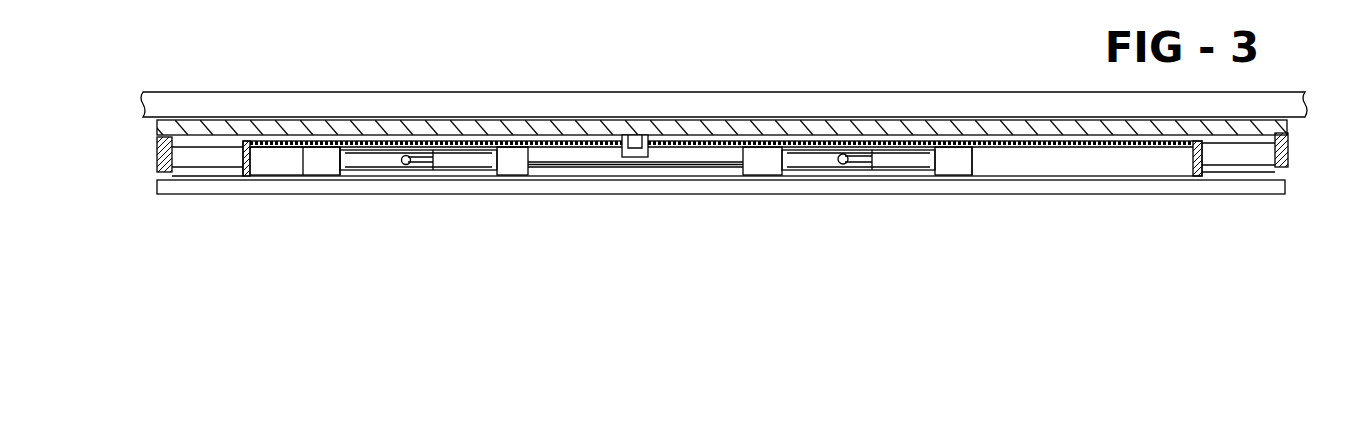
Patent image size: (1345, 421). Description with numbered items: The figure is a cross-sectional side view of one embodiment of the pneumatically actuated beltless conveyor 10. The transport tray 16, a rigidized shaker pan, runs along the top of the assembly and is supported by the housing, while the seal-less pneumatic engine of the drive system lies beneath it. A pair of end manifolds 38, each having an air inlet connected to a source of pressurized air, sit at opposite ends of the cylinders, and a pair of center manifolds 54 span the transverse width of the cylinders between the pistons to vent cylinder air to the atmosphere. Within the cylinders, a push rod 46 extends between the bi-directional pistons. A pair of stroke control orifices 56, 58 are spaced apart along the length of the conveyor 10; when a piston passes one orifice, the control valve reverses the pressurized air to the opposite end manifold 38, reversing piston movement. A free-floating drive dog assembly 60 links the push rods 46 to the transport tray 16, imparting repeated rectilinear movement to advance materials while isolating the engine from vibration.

The conveyor 10 is at (168, 215).
The transport tray 16 is at (997, 97).
The end manifolds 38 is at (322, 163).
The push rod 46 is at (687, 158).
The center manifolds 54 is at (513, 157).
The stroke control orifice 56 is at (398, 164).
The stroke control orifice 58 is at (860, 160).
The drive dog assembly 60 is at (643, 147).